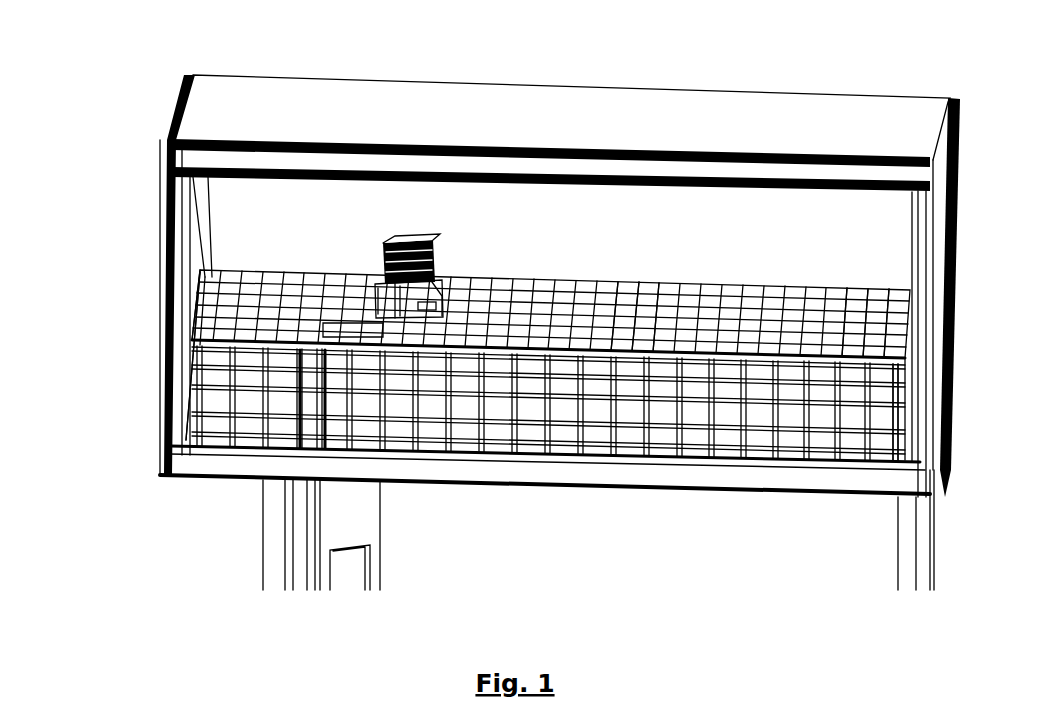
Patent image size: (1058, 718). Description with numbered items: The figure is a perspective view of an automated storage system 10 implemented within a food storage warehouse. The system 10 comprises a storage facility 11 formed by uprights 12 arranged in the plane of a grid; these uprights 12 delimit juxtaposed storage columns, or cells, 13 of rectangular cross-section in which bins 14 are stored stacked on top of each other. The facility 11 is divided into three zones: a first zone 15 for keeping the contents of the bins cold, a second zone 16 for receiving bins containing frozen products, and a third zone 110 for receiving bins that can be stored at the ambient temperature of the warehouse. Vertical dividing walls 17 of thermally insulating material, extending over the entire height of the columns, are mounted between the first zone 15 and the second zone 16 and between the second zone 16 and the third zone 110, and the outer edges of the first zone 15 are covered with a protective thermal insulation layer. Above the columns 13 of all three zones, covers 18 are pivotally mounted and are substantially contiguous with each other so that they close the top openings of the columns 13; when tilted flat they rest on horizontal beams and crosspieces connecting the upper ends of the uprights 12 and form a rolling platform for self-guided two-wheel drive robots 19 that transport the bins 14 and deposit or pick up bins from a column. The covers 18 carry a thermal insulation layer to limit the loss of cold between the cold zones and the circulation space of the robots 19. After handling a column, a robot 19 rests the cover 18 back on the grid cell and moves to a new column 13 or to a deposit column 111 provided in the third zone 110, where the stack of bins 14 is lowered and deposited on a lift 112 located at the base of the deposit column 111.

The system 10 is at (186, 517).
The storage facility 11 is at (192, 388).
The uprights 12 is at (455, 425).
The storage columns 13 is at (240, 420).
The bins 14 is at (198, 345).
The first zone 15 is at (847, 273).
The second zone 16 is at (649, 262).
The vertical dividing walls 17 is at (557, 425).
The covers 18 is at (651, 312).
The robots 19 is at (470, 275).
The third zone 110 is at (363, 246).
The deposit column 111 is at (325, 335).
The lift 112 is at (347, 538).